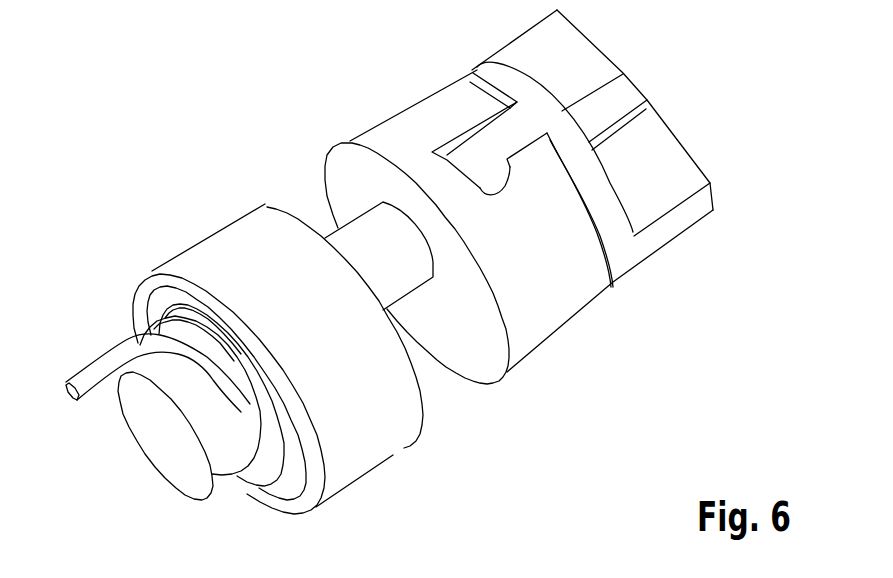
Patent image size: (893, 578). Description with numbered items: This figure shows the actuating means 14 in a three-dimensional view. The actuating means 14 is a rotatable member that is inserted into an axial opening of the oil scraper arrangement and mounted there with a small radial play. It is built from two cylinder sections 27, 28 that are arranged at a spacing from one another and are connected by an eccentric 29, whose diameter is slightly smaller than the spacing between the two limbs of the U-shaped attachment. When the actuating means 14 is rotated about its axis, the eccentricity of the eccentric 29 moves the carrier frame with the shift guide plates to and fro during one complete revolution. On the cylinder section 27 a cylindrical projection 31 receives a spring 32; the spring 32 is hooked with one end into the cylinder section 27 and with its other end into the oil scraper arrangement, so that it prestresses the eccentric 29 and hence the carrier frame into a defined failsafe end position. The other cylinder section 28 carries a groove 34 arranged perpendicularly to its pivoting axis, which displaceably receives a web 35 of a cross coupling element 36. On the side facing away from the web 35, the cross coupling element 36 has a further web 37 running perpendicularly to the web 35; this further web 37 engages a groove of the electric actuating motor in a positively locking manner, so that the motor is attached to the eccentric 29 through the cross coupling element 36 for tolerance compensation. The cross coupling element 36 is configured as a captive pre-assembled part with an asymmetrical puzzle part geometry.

The actuating means 14 is at (352, 109).
The cylinder section 27 is at (367, 443).
The cylinder section 28 is at (563, 303).
The eccentric 29 is at (397, 273).
The cylindrical projection 31 is at (162, 441).
The spring 32 is at (93, 384).
The groove 34 is at (457, 132).
The web 35 is at (488, 148).
The cross coupling element 36 is at (675, 75).
The further web 37 is at (658, 197).